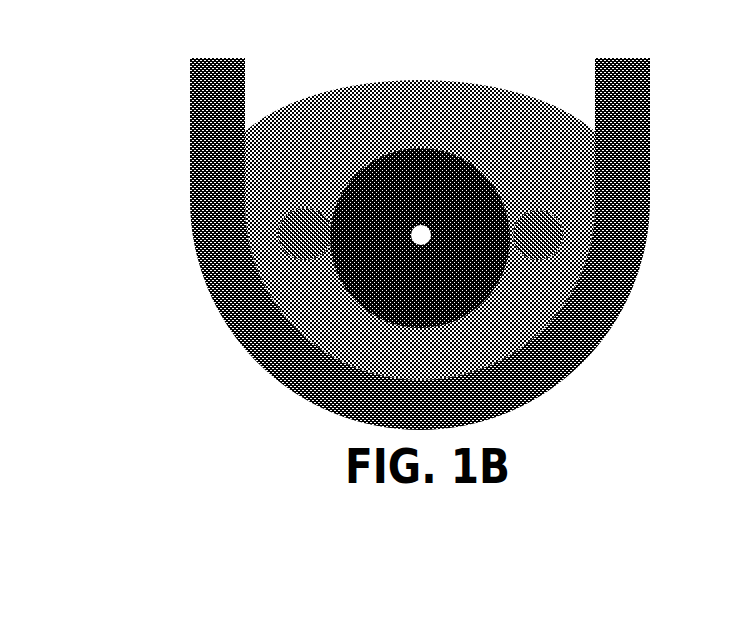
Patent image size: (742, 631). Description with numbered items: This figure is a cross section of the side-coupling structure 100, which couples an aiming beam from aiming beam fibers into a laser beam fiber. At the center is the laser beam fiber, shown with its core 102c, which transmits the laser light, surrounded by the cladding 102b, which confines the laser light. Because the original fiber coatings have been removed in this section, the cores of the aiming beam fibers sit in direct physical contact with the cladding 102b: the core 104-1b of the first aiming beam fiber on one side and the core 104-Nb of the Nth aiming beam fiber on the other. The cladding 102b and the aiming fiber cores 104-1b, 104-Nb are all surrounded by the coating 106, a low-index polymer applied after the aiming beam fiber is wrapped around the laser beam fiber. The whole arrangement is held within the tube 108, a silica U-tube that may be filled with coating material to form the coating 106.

The side-coupling structure 100 is at (203, 22).
The cladding 102b is at (446, 188).
The core 102c is at (423, 245).
The core 104-1b is at (532, 235).
The core 104-Nb is at (306, 236).
The coating 106 is at (439, 120).
The tube 108 is at (233, 120).